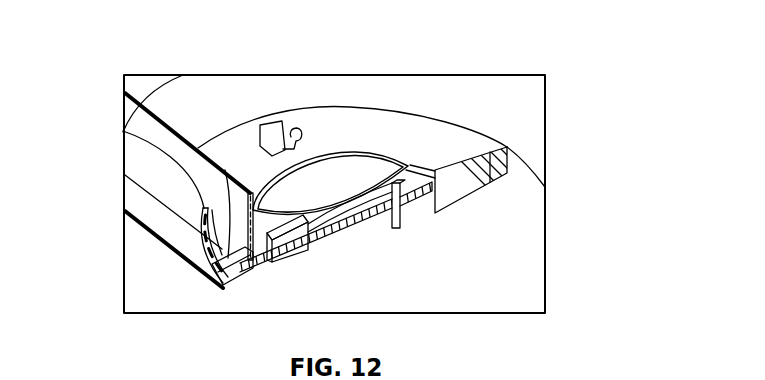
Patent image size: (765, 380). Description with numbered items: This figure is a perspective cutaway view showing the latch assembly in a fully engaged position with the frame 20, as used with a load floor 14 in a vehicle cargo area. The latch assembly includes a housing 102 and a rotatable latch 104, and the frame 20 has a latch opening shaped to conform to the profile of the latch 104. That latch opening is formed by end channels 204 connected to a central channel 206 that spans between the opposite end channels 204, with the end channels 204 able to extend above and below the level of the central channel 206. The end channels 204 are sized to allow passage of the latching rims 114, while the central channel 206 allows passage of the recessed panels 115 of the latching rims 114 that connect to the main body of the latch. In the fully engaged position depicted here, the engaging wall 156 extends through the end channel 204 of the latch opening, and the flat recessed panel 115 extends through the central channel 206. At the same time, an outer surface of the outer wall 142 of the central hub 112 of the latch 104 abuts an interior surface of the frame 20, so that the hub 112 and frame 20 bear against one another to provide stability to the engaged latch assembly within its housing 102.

The load floor 14 is at (522, 123).
The frame 20 is at (141, 158).
The housing 102 is at (435, 133).
The rotatable latch 104 is at (328, 183).
The central hub 112 is at (362, 173).
The latching rims 114 is at (212, 262).
The recessed panel 115 is at (248, 277).
The outer wall 142 is at (264, 188).
The engaging wall 156 is at (200, 237).
The end channel 204 is at (123, 131).
The central channel 206 is at (228, 198).